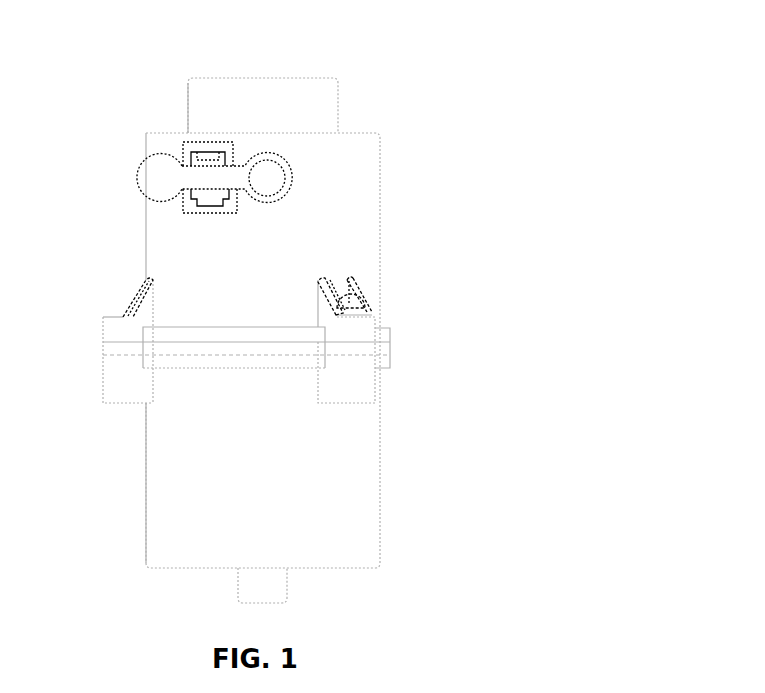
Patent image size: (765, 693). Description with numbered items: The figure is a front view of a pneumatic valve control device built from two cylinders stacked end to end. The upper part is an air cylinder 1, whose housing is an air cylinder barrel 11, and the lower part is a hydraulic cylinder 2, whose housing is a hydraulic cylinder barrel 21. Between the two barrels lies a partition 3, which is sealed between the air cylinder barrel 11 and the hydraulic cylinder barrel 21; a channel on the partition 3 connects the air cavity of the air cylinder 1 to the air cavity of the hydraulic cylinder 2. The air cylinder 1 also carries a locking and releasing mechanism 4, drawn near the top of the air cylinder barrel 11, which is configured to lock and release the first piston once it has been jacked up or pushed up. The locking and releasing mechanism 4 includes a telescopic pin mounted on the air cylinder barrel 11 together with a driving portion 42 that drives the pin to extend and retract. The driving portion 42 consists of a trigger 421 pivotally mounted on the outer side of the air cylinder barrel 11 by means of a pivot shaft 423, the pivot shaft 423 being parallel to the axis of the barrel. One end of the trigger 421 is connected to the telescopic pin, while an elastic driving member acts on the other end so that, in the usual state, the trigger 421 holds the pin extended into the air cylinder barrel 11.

The air cylinder 1 is at (250, 241).
The air cylinder barrel 11 is at (370, 213).
The hydraulic cylinder 2 is at (253, 503).
The hydraulic cylinder barrel 21 is at (363, 472).
The partition 3 is at (396, 343).
The locking and releasing mechanism 4 is at (160, 110).
The driving portion 42 is at (120, 166).
The trigger 421 is at (227, 178).
The pivot shaft 423 is at (208, 158).